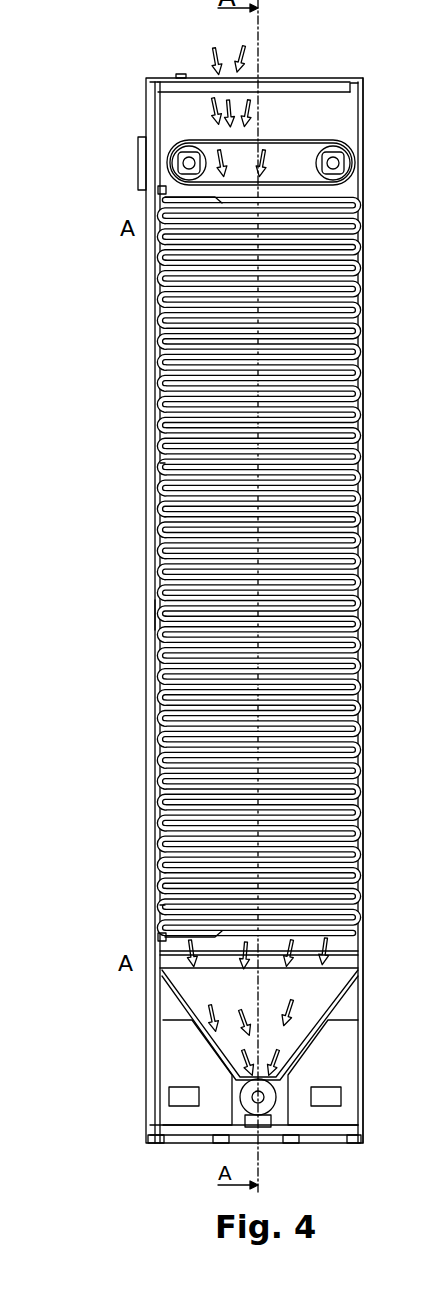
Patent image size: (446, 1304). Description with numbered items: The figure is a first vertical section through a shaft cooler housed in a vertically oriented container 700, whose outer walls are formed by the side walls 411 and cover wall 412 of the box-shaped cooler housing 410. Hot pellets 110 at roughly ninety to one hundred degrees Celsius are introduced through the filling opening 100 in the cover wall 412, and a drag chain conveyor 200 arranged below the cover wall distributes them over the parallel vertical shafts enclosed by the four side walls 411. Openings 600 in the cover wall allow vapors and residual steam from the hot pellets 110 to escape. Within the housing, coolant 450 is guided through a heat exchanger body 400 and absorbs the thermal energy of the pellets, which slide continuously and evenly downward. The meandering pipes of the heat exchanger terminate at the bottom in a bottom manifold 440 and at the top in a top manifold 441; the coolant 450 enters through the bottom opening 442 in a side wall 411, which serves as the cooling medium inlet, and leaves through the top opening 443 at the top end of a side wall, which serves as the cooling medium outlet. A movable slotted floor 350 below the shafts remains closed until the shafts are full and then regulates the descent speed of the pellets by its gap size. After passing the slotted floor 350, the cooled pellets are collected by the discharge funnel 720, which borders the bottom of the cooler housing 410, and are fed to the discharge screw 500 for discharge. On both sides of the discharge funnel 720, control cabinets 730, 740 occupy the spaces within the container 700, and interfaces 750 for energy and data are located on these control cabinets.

The filling opening 100 is at (273, 78).
The hot pellets 110 is at (234, 100).
The drag chain conveyor 200 is at (342, 140).
The slotted floor 350 is at (345, 952).
The heat exchanger body 400 is at (358, 286).
The cooler housing 410 is at (150, 615).
The side wall 411 is at (158, 463).
The cover wall 412 is at (150, 82).
The bottom manifold 440 is at (158, 905).
The top manifold 441 is at (160, 232).
The bottom opening 442 is at (160, 970).
The top opening 443 is at (140, 166).
The coolant 450 is at (160, 190).
The discharge screw 500 is at (262, 1096).
The openings 600 is at (180, 74).
The container 700 is at (362, 78).
The discharge funnel 720 is at (330, 985).
The control cabinet 730 is at (190, 1055).
The control cabinet 740 is at (340, 1048).
The interfaces 750 is at (185, 1100).